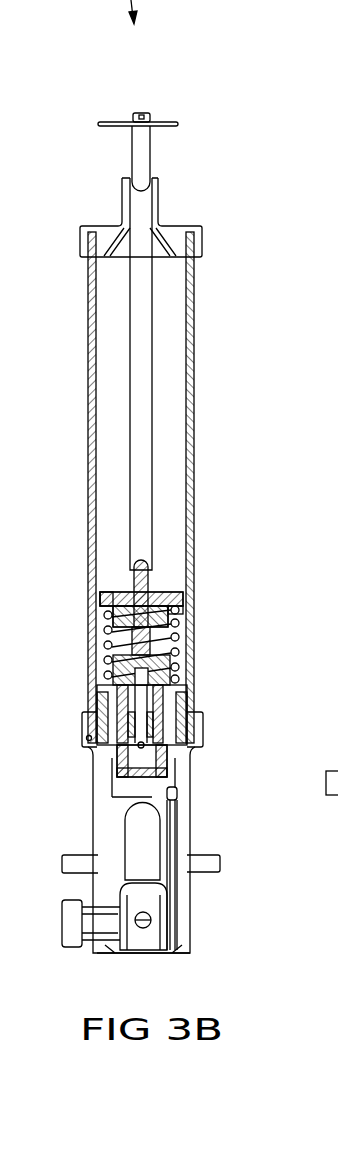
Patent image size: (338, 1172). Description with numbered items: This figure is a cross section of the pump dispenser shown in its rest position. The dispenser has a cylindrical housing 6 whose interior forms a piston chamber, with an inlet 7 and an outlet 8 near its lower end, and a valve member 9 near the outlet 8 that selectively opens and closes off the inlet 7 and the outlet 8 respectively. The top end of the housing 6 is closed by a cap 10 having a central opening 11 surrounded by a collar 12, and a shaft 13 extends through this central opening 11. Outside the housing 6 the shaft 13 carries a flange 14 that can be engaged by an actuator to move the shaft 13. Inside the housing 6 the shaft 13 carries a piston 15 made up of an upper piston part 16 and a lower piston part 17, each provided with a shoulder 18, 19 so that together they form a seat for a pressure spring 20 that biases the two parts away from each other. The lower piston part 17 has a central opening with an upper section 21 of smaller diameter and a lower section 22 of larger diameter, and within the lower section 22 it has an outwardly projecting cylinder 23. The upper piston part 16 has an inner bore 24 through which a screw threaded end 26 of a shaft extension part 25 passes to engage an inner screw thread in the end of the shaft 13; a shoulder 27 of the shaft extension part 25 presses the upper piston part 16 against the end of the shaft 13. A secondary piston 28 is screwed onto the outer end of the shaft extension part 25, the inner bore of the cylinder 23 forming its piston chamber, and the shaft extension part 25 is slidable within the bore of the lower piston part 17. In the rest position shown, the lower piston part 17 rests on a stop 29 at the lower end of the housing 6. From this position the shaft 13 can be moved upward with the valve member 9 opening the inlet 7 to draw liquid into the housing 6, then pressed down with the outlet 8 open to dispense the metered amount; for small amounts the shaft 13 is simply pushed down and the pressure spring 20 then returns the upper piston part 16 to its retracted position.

The cylindrical housing 6 is at (194, 330).
The inlet 7 is at (147, 820).
The outlet 8 is at (150, 963).
The valve member 9 is at (150, 898).
The cap 10 is at (170, 223).
The central opening 11 is at (120, 176).
The collar 12 is at (157, 197).
The shaft 13 is at (147, 410).
The flange 14 is at (180, 123).
The piston 15 is at (110, 587).
The upper piston part 16 is at (183, 592).
The lower piston part 17 is at (187, 680).
The shoulder 18 is at (196, 610).
The shoulder 19 is at (203, 725).
The pressure spring 20 is at (160, 642).
The upper section 21 is at (90, 688).
The lower section 22 is at (128, 722).
The cylinder 23 is at (100, 747).
The inner bore 24 is at (162, 578).
The shaft extension part 25 is at (117, 652).
The screw threaded end 26 is at (132, 586).
The shoulder 27 is at (118, 612).
The secondary piston 28 is at (173, 787).
The stop 29 is at (97, 757).